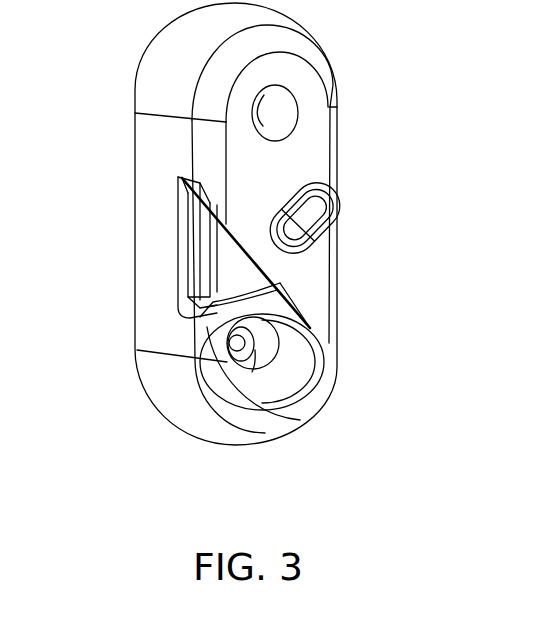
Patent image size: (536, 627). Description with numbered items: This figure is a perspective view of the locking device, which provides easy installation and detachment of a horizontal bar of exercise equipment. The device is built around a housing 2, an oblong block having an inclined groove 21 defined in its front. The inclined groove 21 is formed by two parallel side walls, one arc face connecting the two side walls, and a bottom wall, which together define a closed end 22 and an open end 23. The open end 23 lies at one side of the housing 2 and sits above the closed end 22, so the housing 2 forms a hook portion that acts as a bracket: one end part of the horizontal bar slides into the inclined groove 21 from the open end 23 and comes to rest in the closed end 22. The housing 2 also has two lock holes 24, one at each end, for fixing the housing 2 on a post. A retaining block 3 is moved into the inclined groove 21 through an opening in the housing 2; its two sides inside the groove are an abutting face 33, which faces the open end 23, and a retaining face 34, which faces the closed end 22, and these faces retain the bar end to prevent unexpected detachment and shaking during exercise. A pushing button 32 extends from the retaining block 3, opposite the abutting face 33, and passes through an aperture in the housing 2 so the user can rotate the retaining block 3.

The housing 2 is at (165, 72).
The retaining block 3 is at (228, 247).
The inclined groove 21 is at (197, 328).
The closed end 22 is at (312, 386).
The open end 23 is at (170, 236).
The lock holes 24 is at (272, 105).
The pushing button 32 is at (340, 200).
The abutting face 33 is at (198, 263).
The retaining face 34 is at (288, 303).